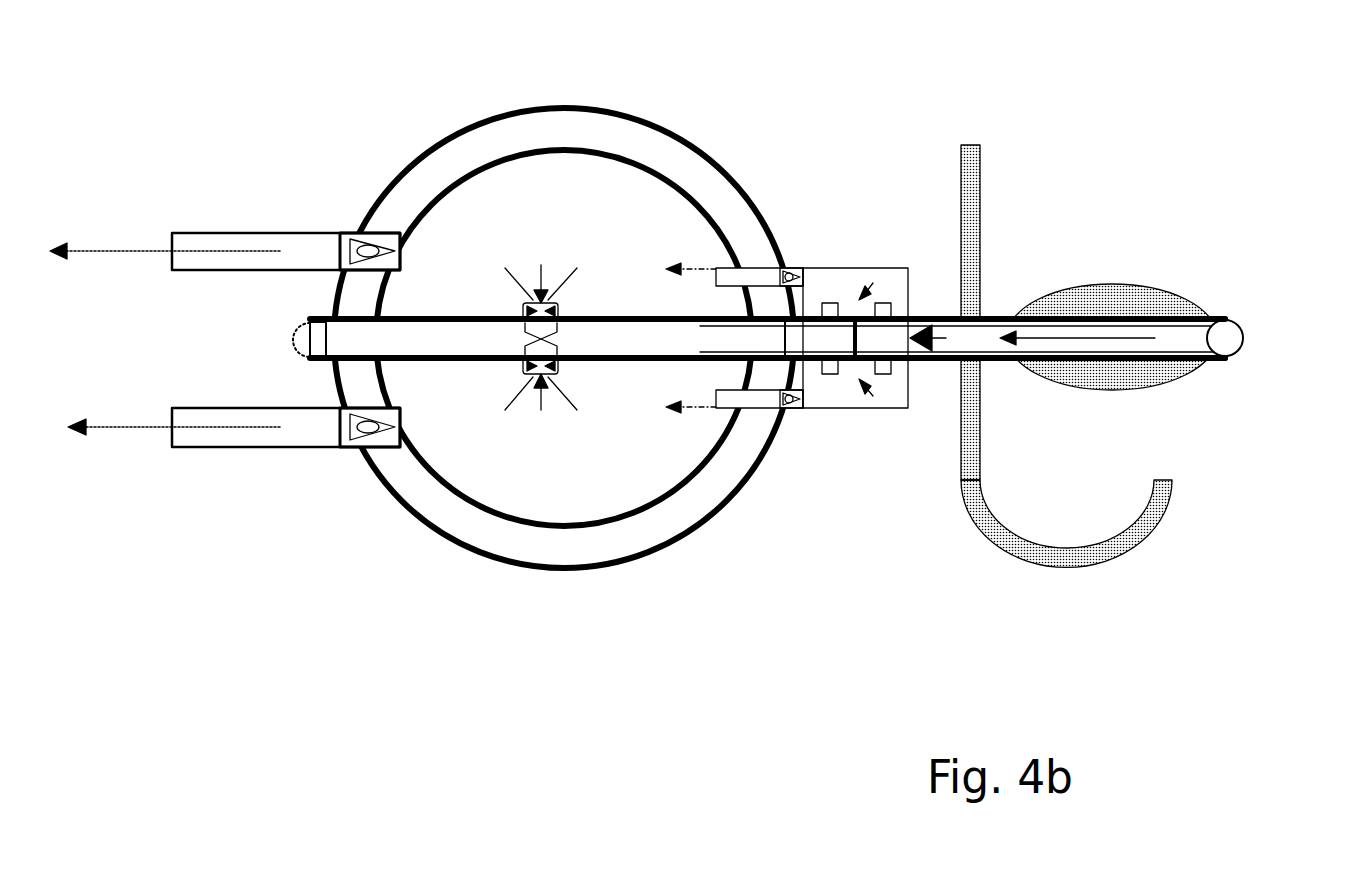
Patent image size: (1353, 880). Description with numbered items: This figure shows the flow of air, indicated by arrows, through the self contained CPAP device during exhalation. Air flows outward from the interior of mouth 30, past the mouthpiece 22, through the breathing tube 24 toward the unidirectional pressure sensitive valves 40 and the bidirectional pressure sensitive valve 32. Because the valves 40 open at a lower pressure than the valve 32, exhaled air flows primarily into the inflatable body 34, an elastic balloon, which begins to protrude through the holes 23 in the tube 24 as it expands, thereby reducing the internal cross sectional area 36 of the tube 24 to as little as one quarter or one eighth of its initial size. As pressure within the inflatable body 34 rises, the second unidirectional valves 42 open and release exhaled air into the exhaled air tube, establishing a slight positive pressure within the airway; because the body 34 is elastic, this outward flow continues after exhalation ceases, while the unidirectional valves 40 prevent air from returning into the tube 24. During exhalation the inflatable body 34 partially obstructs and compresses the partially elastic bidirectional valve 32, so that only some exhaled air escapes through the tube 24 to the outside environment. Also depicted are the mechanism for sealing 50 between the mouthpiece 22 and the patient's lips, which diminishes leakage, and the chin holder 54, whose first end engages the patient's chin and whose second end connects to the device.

The mouthpiece 22 is at (1143, 353).
The holes 23 is at (535, 300).
The breathing tube 24 is at (1103, 338).
The interior of mouth 30 is at (813, 325).
The bidirectional pressure sensitive valve 32 is at (857, 338).
The inflatable body 34 is at (640, 433).
The internal cross sectional area 36 is at (563, 345).
The first additional unidirectional pressure sensitive valve 40 is at (867, 273).
The second additional unidirectional pressure sensitive valve 42 is at (333, 233).
The mechanism for sealing 50 is at (980, 205).
The chin holder 54 is at (1110, 560).